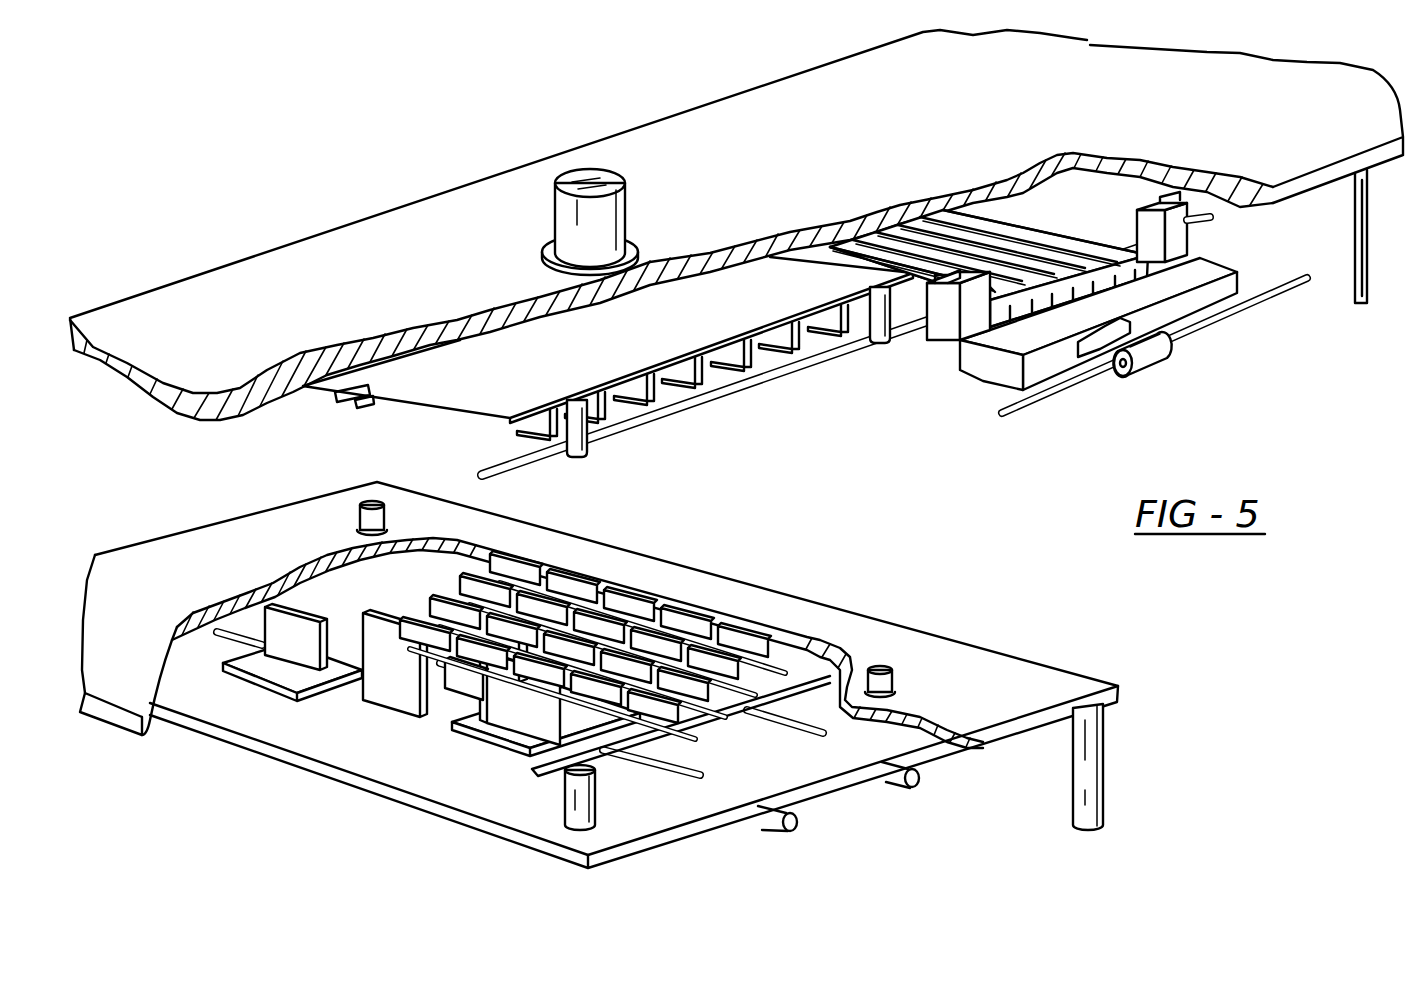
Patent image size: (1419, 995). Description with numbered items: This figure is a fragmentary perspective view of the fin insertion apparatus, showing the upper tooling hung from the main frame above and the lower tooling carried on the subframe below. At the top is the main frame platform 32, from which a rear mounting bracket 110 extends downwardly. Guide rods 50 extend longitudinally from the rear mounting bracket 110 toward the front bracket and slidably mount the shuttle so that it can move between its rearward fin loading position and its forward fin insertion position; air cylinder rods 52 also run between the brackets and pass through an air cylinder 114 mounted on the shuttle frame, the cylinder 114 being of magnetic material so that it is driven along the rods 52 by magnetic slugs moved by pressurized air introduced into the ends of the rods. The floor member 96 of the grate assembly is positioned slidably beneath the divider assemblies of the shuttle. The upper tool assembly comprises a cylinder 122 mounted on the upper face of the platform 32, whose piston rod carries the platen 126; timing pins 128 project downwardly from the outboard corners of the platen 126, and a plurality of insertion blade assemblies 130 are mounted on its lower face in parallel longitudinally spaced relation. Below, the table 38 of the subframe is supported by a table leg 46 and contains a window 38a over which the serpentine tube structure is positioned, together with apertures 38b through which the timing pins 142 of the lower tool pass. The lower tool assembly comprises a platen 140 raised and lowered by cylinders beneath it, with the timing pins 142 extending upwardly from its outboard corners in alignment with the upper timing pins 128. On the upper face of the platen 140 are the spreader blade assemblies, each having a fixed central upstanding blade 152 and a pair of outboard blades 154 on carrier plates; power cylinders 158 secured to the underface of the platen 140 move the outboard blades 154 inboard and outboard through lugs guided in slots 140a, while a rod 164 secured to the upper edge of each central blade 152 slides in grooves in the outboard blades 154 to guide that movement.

The platform 32 is at (772, 144).
The rear mounting bracket 110 is at (1333, 285).
The cylinder 122 is at (560, 213).
The platen 126 is at (702, 324).
The insertion blade assemblies 130 is at (386, 418).
The guide rods 50 is at (806, 372).
The timing pins 128 is at (588, 458).
The floor member 96 is at (930, 362).
The air cylinder rods 52 is at (1246, 316).
The air cylinder 114 is at (1152, 368).
The platen 140 is at (358, 782).
The slots 140a is at (783, 731).
The table 38 is at (904, 643).
The window 38a is at (717, 607).
The apertures 38b is at (892, 691).
The outboard blades 154 is at (290, 645).
The fixed central upstanding blade 152 is at (390, 688).
The rod 164 is at (455, 680).
The timing pins 142 is at (357, 515).
The power cylinders 158 is at (921, 778).
The table leg 46 is at (1104, 778).